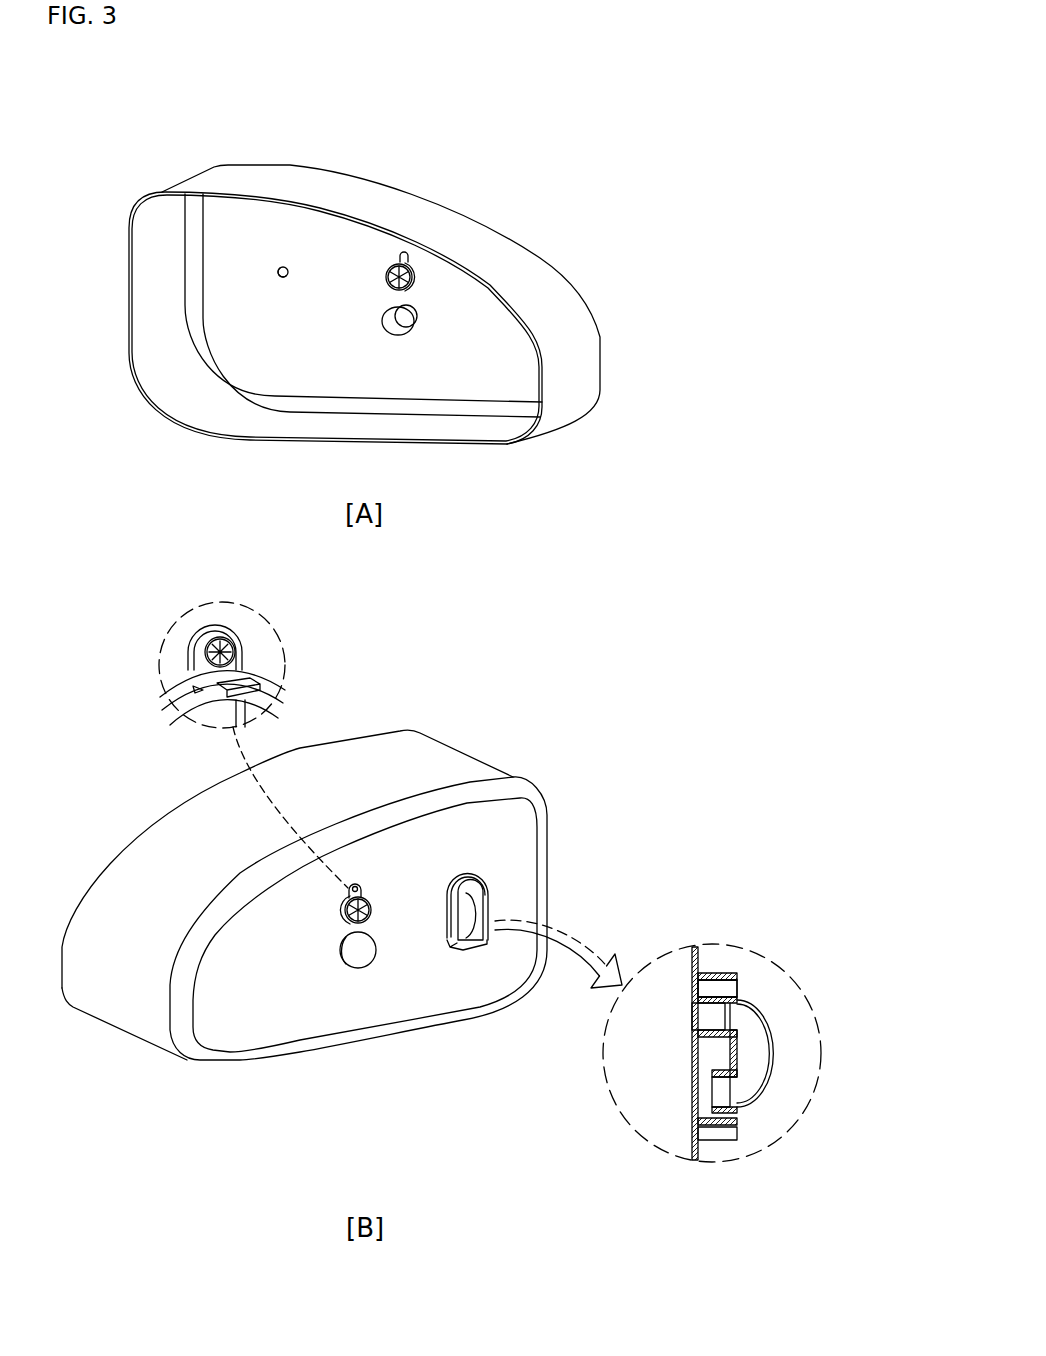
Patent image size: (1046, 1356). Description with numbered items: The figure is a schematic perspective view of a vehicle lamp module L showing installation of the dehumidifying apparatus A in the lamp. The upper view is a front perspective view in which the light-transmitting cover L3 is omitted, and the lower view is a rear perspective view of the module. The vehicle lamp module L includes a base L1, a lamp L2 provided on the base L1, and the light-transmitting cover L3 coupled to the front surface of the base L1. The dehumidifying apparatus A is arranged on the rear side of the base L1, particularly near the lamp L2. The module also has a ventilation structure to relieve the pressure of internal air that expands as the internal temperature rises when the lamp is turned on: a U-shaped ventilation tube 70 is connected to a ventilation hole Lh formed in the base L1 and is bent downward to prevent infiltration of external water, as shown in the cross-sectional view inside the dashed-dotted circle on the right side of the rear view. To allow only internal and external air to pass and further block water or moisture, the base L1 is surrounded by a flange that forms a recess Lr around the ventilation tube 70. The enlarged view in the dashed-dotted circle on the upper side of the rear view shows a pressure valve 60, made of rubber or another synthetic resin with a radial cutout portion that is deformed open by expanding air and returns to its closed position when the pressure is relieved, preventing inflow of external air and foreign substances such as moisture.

The vehicle lamp module L is at (366, 675).
The base L1 is at (573, 356).
The lamp L2 is at (408, 322).
The light-transmitting cover L3 is at (470, 310).
The ventilation hole Lh is at (283, 266).
The recess Lr is at (728, 990).
The dehumidifying apparatus A is at (440, 262).
The pressure valve 60 is at (228, 652).
The ventilation tube 70 is at (503, 904).